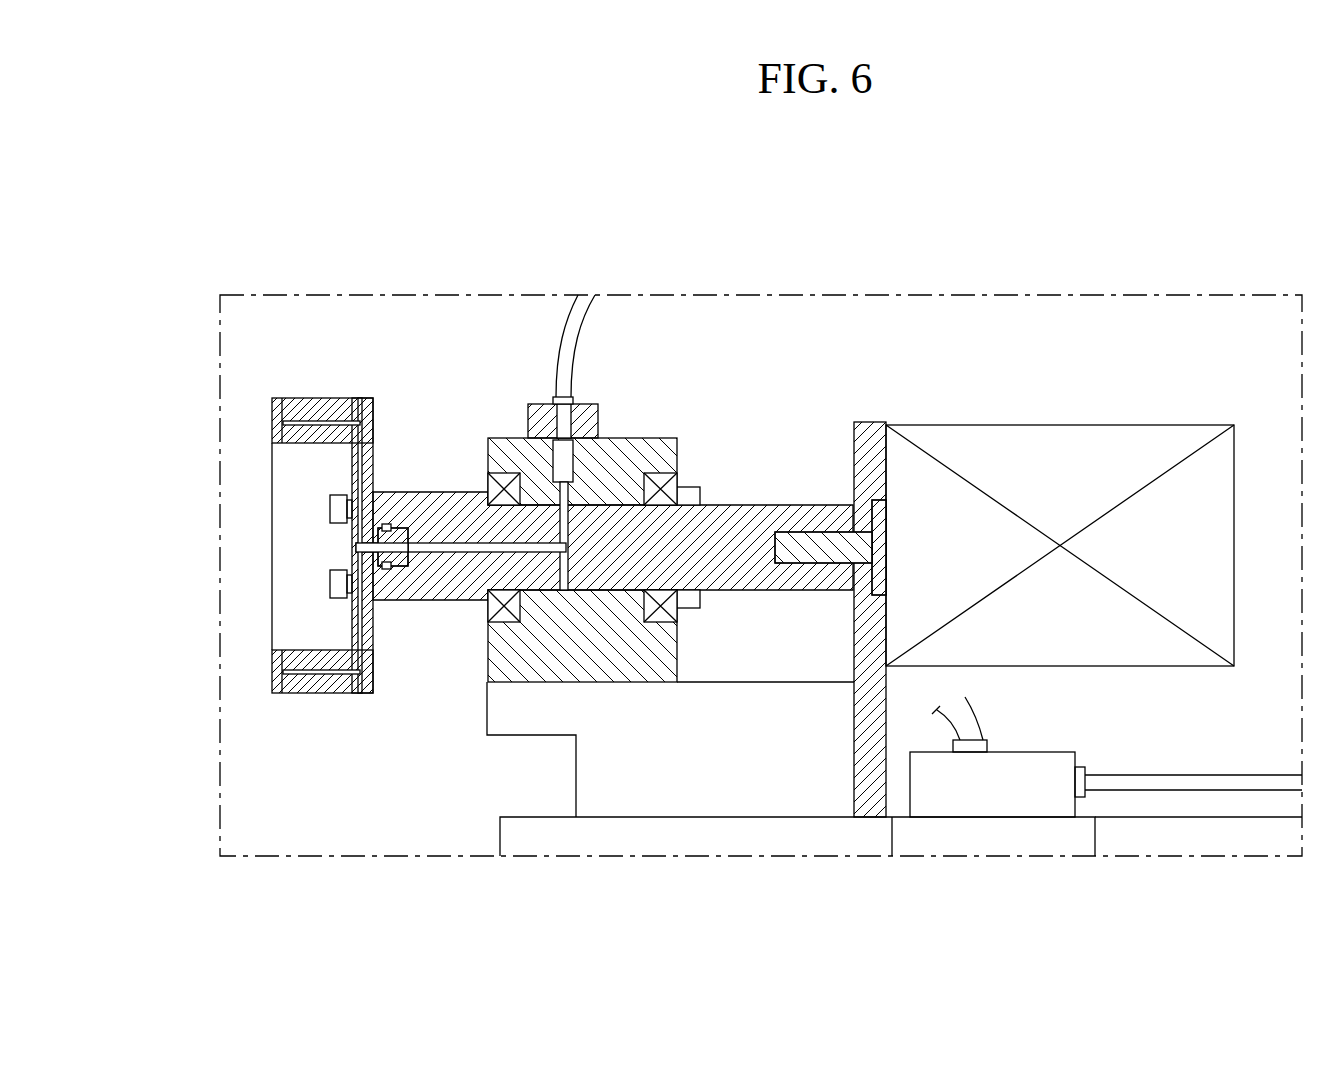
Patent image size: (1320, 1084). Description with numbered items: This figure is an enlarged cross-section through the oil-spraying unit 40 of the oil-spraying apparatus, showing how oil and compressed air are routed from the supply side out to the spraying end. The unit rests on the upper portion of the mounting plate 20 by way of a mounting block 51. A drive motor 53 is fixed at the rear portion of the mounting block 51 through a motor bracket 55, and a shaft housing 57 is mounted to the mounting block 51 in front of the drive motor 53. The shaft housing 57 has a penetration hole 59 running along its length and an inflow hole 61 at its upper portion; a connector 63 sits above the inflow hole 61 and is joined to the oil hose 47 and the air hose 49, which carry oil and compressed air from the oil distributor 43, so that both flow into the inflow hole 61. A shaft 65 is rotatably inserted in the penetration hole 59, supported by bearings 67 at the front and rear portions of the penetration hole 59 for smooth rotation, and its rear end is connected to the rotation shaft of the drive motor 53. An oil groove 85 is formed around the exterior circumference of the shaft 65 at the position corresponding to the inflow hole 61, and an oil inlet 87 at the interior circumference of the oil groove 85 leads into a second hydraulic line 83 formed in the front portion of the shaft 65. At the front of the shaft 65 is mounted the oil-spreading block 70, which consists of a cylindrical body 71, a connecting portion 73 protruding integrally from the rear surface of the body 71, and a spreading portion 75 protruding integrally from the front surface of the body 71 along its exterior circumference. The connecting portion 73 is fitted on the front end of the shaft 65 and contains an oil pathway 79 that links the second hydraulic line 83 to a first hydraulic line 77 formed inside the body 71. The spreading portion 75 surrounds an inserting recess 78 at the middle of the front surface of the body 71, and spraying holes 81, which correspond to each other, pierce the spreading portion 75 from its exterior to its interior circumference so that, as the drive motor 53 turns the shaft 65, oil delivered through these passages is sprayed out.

The mounting plate 20 is at (1200, 845).
The oil-spraying unit 40 is at (778, 408).
The oil distributor 43 is at (986, 808).
The oil hose 47 is at (970, 720).
The air hose 49 is at (556, 372).
The mounting block 51 is at (585, 782).
The drive motor 53 is at (1058, 430).
The motor bracket 55 is at (872, 422).
The shaft housing 57 is at (617, 438).
The penetration hole 59 is at (633, 505).
The inflow hole 61 is at (560, 462).
The connector 63 is at (528, 415).
The shaft 65 is at (428, 493).
The bearings 67 is at (677, 612).
The oil-spreading block 70 is at (350, 380).
The body 71 is at (370, 398).
The connecting portion 73 is at (387, 568).
The spreading portion 75 is at (303, 398).
The first hydraulic line 77 is at (366, 627).
The inserting recess 78 is at (297, 453).
The oil pathway 79 is at (390, 524).
The spraying holes 81 is at (266, 447).
The second hydraulic line 83 is at (466, 538).
The oil groove 85 is at (551, 586).
The oil inlet 87 is at (613, 530).